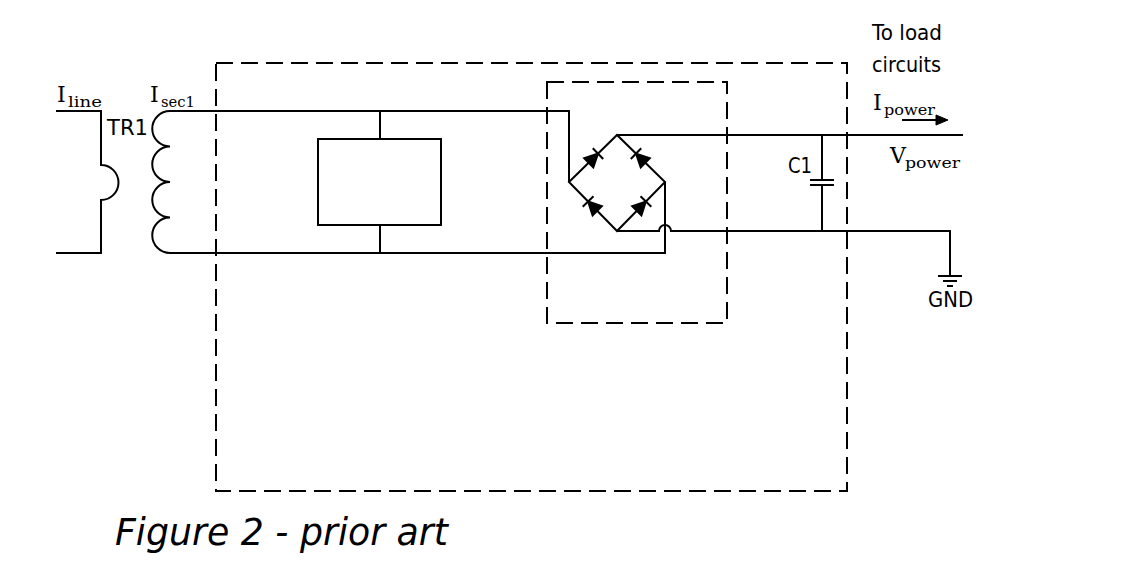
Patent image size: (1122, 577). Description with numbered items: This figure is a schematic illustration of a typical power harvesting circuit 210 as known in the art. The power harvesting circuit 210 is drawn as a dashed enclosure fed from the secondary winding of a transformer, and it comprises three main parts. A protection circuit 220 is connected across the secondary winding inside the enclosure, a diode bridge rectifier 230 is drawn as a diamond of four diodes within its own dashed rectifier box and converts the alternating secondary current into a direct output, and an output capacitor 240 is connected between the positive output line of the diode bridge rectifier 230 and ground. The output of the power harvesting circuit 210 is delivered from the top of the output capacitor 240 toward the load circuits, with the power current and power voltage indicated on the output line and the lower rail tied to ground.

The power harvesting circuit 210 is at (216, 422).
The protection circuit 220 is at (428, 138).
The diode bridge rectifier 230 is at (727, 305).
The output capacitor 240 is at (822, 203).